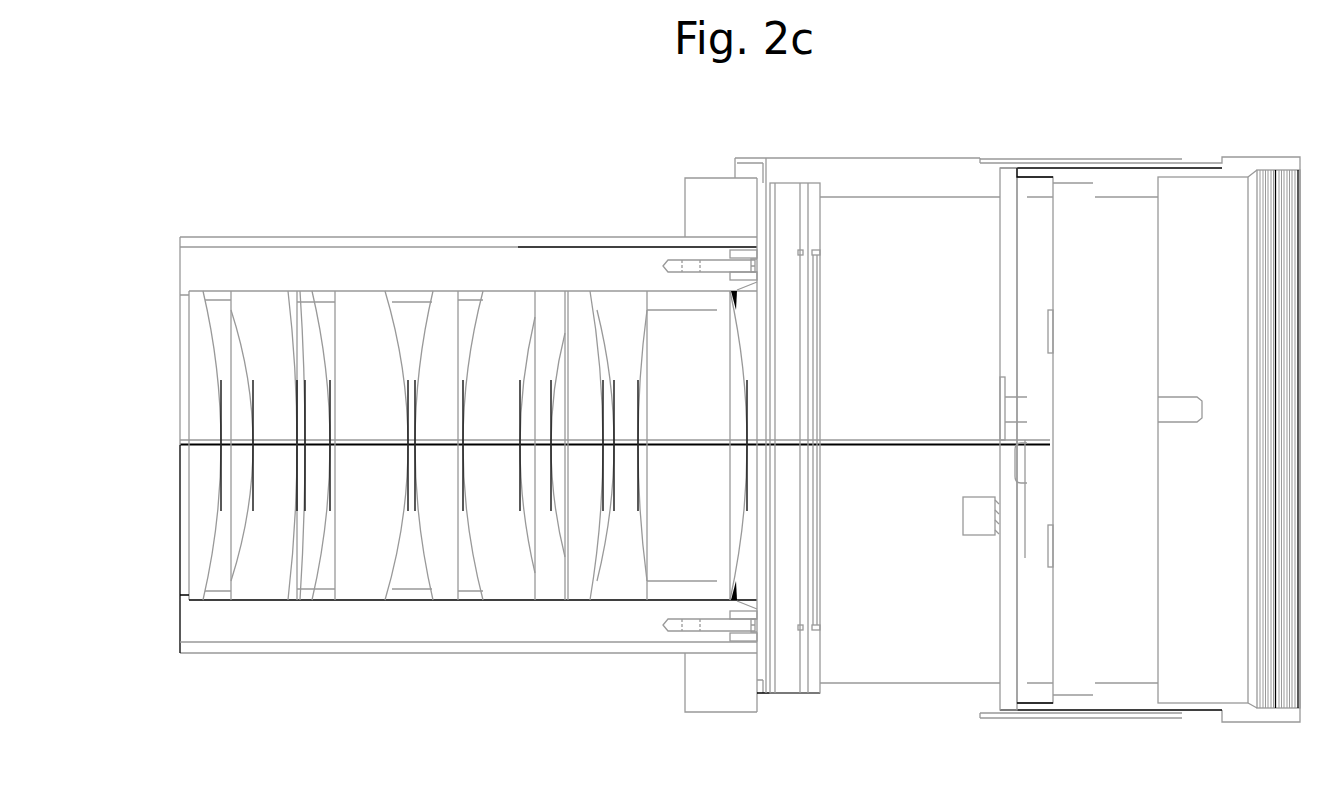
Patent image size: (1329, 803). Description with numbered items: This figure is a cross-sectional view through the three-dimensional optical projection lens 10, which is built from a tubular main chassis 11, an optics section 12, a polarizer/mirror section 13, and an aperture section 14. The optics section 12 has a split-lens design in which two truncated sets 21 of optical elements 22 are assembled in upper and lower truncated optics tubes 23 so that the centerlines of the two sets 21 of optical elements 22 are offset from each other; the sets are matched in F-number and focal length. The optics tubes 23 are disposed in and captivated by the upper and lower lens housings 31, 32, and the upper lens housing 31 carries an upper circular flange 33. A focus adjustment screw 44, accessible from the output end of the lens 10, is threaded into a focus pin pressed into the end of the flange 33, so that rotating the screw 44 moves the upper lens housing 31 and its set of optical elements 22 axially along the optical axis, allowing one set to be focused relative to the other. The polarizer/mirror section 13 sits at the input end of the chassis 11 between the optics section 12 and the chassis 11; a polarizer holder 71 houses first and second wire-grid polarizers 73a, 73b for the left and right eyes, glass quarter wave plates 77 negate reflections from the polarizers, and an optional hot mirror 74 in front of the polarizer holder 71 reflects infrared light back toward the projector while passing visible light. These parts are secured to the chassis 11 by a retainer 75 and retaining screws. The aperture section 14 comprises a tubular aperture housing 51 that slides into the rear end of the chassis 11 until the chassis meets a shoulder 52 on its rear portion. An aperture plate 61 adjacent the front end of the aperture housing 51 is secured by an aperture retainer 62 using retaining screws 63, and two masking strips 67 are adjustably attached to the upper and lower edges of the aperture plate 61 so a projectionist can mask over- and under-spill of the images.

The optical projection lens 10 is at (227, 92).
The main chassis 11 is at (813, 158).
The optics section 12 is at (353, 156).
The polarizer/mirror section 13 is at (871, 104).
The aperture section 14 is at (1145, 101).
The truncated set of optical elements 21 is at (153, 570).
The optical element 22 is at (203, 492).
The truncated optics tube 23 is at (193, 618).
The upper lens housing 31 is at (221, 237).
The lower lens housing 32 is at (255, 653).
The upper circular flange 33 is at (701, 177).
The focus adjustment screw 44 is at (1000, 408).
The aperture housing 51 is at (1139, 168).
The shoulder 52 is at (1246, 157).
The aperture plate 61 is at (1050, 632).
The aperture retainer 62 is at (1027, 600).
The retaining screw 63 is at (1015, 470).
The masking strip 67 is at (1050, 338).
The polarizer holder 71 is at (813, 223).
The first wire grid polarizer 73a is at (812, 548).
The second wire grid polarizer 73b is at (802, 250).
The hot mirror 74 is at (787, 695).
The retainer 75 is at (768, 695).
The quarter wave plate 77 is at (817, 313).